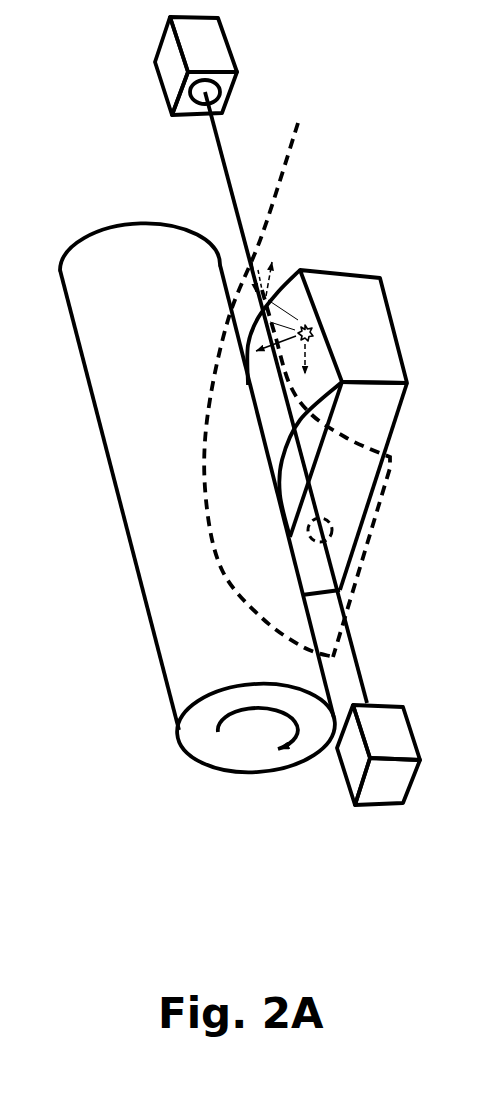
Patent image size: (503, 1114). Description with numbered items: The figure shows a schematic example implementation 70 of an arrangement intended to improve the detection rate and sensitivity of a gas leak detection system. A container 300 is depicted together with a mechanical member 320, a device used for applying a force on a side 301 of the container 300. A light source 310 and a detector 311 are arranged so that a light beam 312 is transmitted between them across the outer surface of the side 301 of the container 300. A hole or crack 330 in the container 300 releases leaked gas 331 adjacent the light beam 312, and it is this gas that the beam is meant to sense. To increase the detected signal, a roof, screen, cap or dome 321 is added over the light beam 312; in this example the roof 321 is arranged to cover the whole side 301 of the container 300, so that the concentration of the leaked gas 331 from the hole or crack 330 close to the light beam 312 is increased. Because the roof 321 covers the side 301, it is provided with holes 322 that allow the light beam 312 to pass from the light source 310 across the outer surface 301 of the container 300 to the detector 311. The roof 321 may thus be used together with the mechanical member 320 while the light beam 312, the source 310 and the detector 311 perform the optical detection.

The implementation 70 is at (88, 718).
The container 300 is at (349, 272).
The side of the container 301 is at (347, 378).
The light source 310 is at (338, 815).
The detector 311 is at (160, 87).
The light beam 312 is at (207, 128).
The mechanical member 320 is at (95, 447).
The roof, screen, cap or dome 321 is at (351, 471).
The holes 322 is at (341, 541).
The hole or crack 330 is at (313, 334).
The leaked gas 331 is at (286, 302).